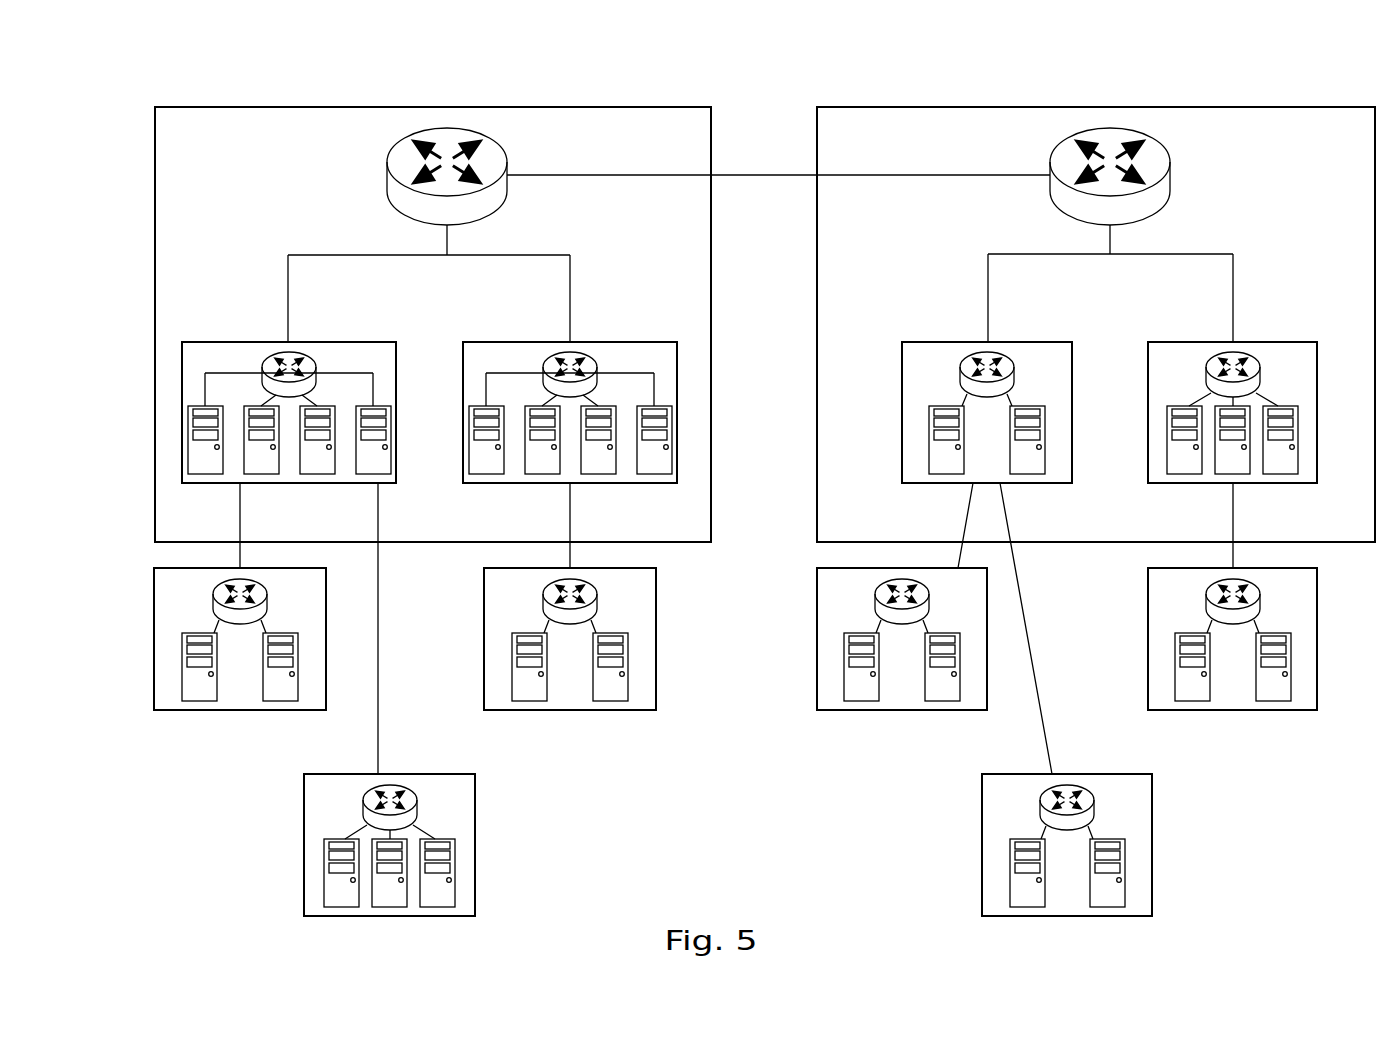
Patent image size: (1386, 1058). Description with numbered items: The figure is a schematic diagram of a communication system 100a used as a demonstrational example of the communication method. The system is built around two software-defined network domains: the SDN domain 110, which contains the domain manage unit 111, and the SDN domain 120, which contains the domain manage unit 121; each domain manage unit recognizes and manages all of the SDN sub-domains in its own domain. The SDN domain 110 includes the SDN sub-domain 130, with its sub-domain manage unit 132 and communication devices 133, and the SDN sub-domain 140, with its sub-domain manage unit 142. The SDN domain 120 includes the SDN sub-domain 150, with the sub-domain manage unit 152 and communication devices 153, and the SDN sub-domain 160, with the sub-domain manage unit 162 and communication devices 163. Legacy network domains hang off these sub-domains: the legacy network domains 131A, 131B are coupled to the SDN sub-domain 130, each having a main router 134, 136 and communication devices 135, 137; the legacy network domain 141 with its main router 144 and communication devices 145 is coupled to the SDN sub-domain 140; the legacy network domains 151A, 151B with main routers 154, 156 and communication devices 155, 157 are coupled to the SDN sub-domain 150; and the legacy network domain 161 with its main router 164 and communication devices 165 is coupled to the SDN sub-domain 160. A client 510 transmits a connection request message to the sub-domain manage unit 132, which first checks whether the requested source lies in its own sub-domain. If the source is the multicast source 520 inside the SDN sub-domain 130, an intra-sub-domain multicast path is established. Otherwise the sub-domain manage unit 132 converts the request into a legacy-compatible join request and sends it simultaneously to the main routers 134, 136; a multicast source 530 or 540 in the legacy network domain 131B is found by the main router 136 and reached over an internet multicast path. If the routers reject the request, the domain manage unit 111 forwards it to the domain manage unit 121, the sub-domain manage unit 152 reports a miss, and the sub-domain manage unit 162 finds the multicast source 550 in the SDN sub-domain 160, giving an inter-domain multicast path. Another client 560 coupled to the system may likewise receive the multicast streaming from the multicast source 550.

The communication system 100a is at (62, 67).
The SDN domain 110 is at (369, 106).
The domain manage unit 111 is at (461, 129).
The SDN domain 120 is at (1030, 106).
The domain manage unit 121 is at (1122, 129).
The SDN sub-domain 130 is at (245, 342).
The sub-domain manage unit 132 is at (311, 356).
The communication devices 133 is at (263, 474).
The SDN sub-domain 140 is at (526, 342).
The sub-domain manage unit 142 is at (593, 356).
The legacy network domain 131A is at (154, 646).
The main router 134 is at (219, 584).
The communication devices 135 is at (193, 701).
The legacy network domain 131B is at (304, 854).
The main router 136 is at (369, 792).
The communication devices 137 is at (324, 865).
The legacy network domain 141 is at (484, 646).
The main router 144 is at (549, 584).
The communication devices 145 is at (524, 701).
The SDN sub-domain 150 is at (902, 420).
The sub-domain manage unit 152 is at (966, 358).
The communication devices 153 is at (938, 474).
The SDN sub-domain 160 is at (1148, 420).
The sub-domain manage unit 162 is at (1209, 358).
The communication devices 163 is at (1167, 432).
The legacy network domain 151A is at (817, 646).
The main router 154 is at (881, 584).
The communication devices 155 is at (856, 701).
The legacy network domain 161 is at (1148, 646).
The main router 164 is at (1212, 584).
The communication devices 165 is at (1186, 701).
The legacy network domain 151B is at (982, 854).
The main router 156 is at (1046, 792).
The communication devices 157 is at (1019, 907).
The client 510 is at (188, 455).
The multicast source 520 is at (391, 460).
The multicast source 530 is at (455, 890).
The multicast source 540 is at (596, 474).
The multicast source 550 is at (1298, 460).
The client 560 is at (655, 474).